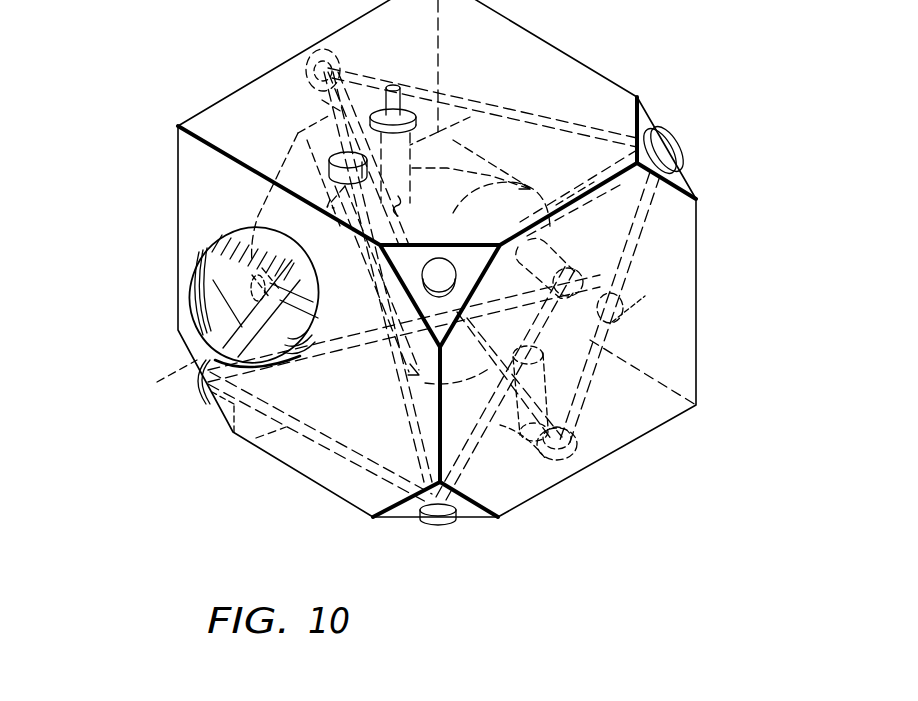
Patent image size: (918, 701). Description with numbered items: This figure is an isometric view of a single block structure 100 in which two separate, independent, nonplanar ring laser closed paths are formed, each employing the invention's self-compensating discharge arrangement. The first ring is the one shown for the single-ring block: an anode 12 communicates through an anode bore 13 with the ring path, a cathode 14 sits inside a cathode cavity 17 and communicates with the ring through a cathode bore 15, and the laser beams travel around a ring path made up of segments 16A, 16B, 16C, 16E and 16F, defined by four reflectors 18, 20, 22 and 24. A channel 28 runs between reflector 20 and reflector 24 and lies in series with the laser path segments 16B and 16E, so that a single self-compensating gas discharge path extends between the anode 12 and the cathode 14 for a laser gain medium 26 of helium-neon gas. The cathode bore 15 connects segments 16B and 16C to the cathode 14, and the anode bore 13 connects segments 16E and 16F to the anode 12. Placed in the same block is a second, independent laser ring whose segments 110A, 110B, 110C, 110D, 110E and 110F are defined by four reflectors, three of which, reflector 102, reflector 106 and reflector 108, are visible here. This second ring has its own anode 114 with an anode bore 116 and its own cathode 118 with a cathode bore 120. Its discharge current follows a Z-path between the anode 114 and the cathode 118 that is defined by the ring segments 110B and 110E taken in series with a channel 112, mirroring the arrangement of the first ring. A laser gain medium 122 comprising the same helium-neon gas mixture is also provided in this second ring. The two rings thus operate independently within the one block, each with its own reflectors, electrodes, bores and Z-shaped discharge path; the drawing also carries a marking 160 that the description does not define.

The anode 12 is at (400, 96).
The anode bore 13 is at (449, 135).
The cathode 14 is at (480, 151).
The cathode bore 15 is at (630, 298).
The ring path segment 16A is at (506, 112).
The ring path segment 16B is at (628, 250).
The ring path segment 16C is at (582, 388).
The ring path segment 16E is at (484, 184).
The ring path segment 16F is at (324, 100).
The cathode cavity 17 is at (270, 192).
The reflector 18 is at (318, 46).
The reflector 20 is at (673, 144).
The reflector 22 is at (579, 446).
The reflector 24 is at (446, 258).
The laser gain medium 26 is at (566, 195).
The channel 28 is at (582, 188).
The block structure 100 is at (144, 375).
The reflector 102 is at (340, 152).
The reflector 106 is at (578, 260).
The reflector 108 is at (446, 523).
The ring segment 110A is at (322, 370).
The ring segment 110B is at (171, 386).
The ring segment 110C is at (296, 153).
The ring segment 110D is at (378, 277).
The ring segment 110E is at (488, 420).
The ring segment 110F is at (602, 335).
The channel 112 is at (320, 442).
The anode 114 is at (516, 448).
The anode bore 116 is at (547, 391).
The cathode 118 is at (192, 268).
The cathode bore 120 is at (297, 309).
The laser gain medium 122 is at (266, 450).
The passage 160 is at (484, 330).